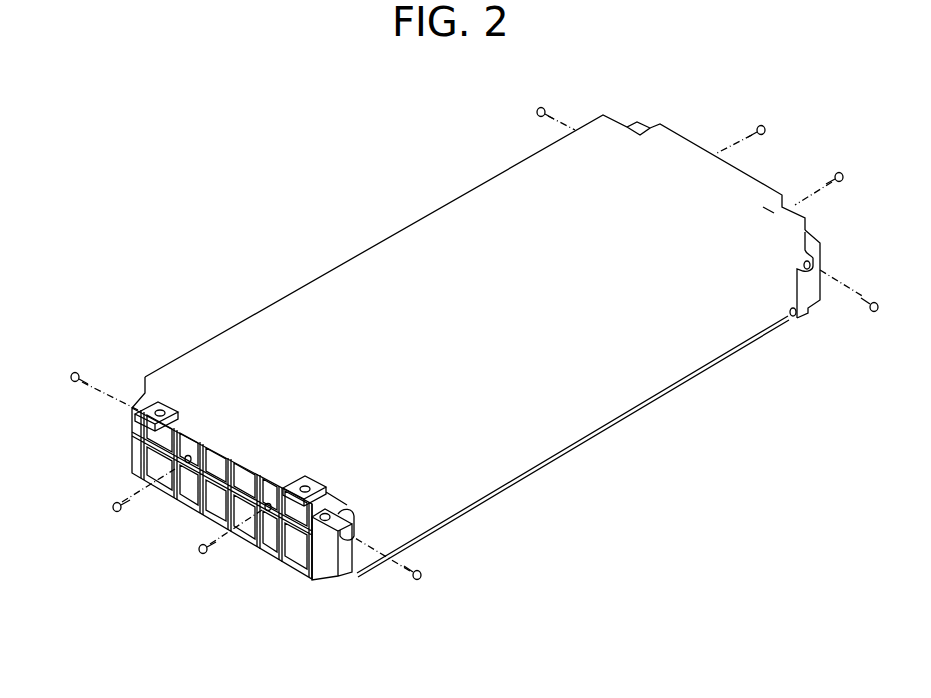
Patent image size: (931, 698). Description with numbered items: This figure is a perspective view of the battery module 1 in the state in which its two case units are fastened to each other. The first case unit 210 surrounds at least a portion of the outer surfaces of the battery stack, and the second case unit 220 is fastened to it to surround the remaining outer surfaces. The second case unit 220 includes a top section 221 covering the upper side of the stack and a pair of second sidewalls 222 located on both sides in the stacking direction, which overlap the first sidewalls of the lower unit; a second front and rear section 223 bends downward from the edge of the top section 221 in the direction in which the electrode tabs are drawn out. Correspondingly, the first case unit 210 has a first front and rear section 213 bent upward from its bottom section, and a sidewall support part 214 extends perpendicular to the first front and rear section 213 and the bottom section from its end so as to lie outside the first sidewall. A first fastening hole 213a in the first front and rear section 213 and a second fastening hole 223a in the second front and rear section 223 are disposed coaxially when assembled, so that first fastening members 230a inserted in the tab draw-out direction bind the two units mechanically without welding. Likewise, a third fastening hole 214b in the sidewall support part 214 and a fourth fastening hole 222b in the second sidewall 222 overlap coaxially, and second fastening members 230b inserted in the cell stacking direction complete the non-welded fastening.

The battery module 1 is at (30, 84).
The first case unit 210 is at (217, 541).
The first front and rear section 213 is at (168, 500).
The first fastening hole 213a is at (175, 453).
The sidewall support part 214 is at (330, 578).
The third fastening hole 214b is at (347, 520).
The second case unit 220 is at (417, 346).
The top section 221 is at (268, 326).
The second sidewall 222 is at (598, 413).
The fourth fastening hole 222b is at (471, 540).
The second front and rear section 223 is at (180, 409).
The second fastening hole 223a is at (180, 454).
The first fastening member 230a is at (198, 549).
The second fastening member 230b is at (873, 312).